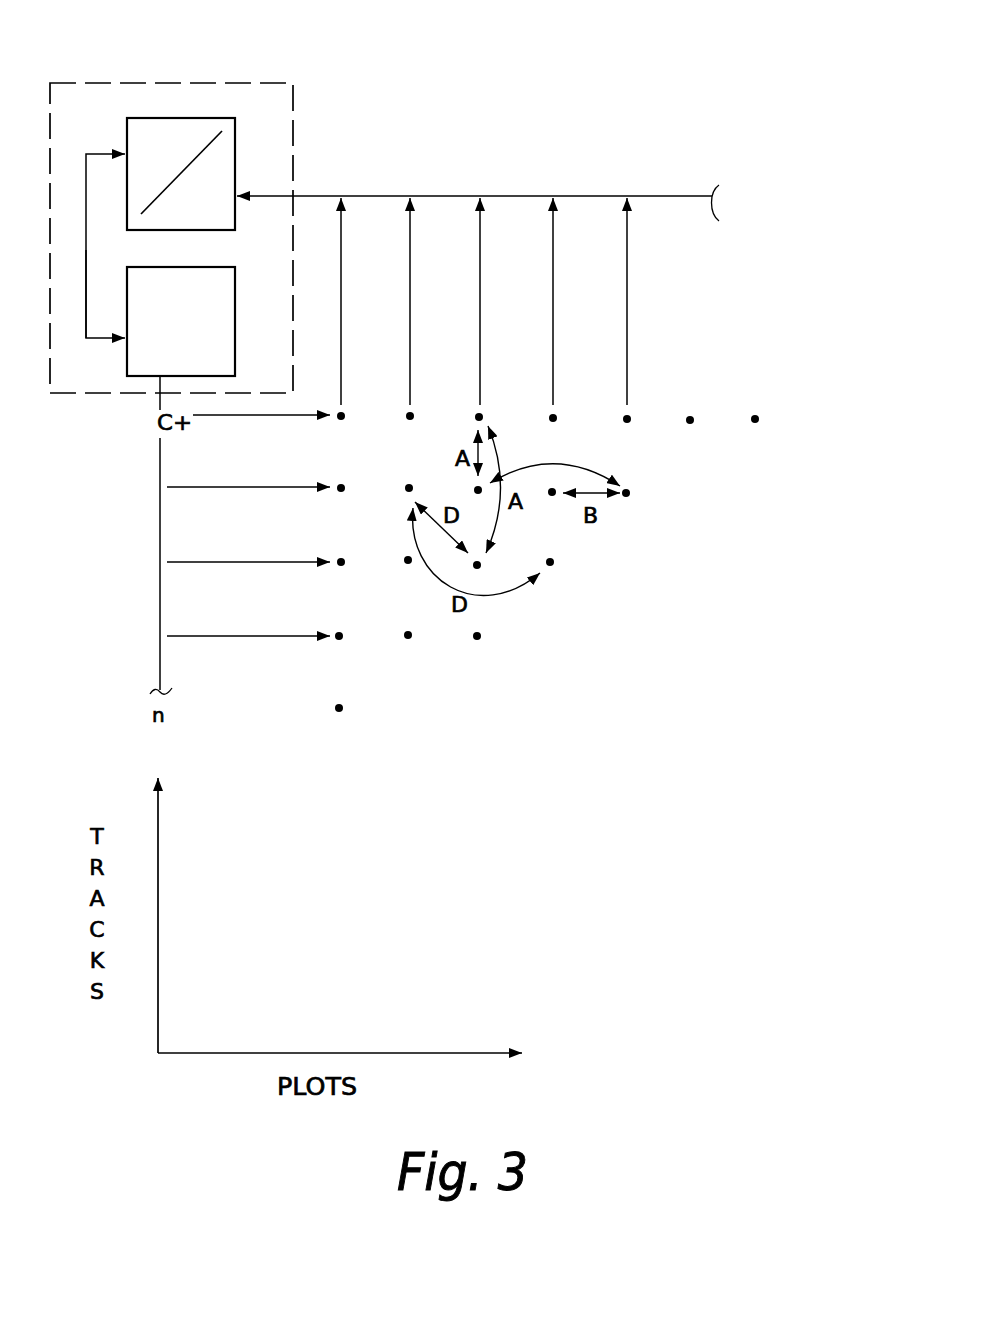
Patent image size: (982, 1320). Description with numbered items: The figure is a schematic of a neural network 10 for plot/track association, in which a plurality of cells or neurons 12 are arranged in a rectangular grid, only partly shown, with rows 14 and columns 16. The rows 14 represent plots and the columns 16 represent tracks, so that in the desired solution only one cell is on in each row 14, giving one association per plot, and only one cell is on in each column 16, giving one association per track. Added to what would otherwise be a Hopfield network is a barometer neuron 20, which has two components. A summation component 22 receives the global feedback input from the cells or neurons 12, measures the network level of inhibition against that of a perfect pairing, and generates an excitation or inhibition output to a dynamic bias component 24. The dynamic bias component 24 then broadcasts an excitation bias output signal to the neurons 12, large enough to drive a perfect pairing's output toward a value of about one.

The neural network 10 is at (604, 160).
The cells or neurons 12 is at (631, 416).
The rows 14 is at (803, 434).
The columns 16 is at (347, 797).
The barometer neuron 20 is at (296, 123).
The summation component 22 is at (147, 118).
The dynamic bias component 24 is at (137, 378).